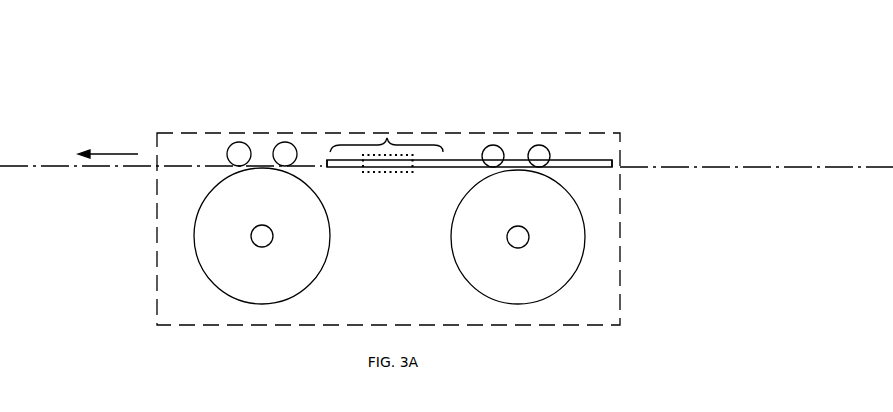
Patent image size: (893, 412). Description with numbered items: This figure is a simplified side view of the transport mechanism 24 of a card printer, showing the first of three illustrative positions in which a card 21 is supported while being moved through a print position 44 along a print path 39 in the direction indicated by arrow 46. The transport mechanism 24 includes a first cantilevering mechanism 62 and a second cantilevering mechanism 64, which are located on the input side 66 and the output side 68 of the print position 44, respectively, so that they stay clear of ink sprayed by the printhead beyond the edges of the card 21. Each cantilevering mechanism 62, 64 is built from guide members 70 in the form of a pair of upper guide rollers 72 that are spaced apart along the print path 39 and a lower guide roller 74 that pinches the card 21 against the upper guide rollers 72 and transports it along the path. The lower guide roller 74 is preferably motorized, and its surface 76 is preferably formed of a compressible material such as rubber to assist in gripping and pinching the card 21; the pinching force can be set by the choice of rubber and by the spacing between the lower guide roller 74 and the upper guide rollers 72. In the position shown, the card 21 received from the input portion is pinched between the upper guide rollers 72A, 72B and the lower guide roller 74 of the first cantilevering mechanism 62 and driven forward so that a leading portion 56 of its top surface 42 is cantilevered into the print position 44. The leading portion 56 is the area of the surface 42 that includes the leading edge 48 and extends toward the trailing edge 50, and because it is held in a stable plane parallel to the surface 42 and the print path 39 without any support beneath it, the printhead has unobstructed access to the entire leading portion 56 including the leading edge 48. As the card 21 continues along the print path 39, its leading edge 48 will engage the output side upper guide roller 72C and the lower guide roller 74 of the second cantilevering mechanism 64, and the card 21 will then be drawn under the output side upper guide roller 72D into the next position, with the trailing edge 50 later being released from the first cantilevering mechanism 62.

The card 21 is at (590, 160).
The transport mechanism 24 is at (620, 295).
The print path 39 is at (750, 168).
The surface of card 42 is at (445, 156).
The print position 44 is at (377, 174).
The arrow 46 is at (110, 154).
The leading edge 48 is at (327, 158).
The trailing edge 50 is at (615, 159).
The leading portion 56 is at (387, 135).
The first cantilevering mechanism 62 is at (570, 145).
The second cantilevering mechanism 64 is at (204, 146).
The input side 66 is at (608, 203).
The output side 68 is at (170, 192).
The guide members 70 is at (408, 166).
The upper guide rollers 72 is at (384, 95).
The upper guide roller 72A is at (548, 140).
The upper guide roller 72B is at (493, 156).
The output side upper guide roller 72C is at (285, 154).
The output side upper guide roller 72D is at (239, 154).
The lower guide roller 74 is at (213, 257).
The surface of lower guide roller 76 is at (451, 242).